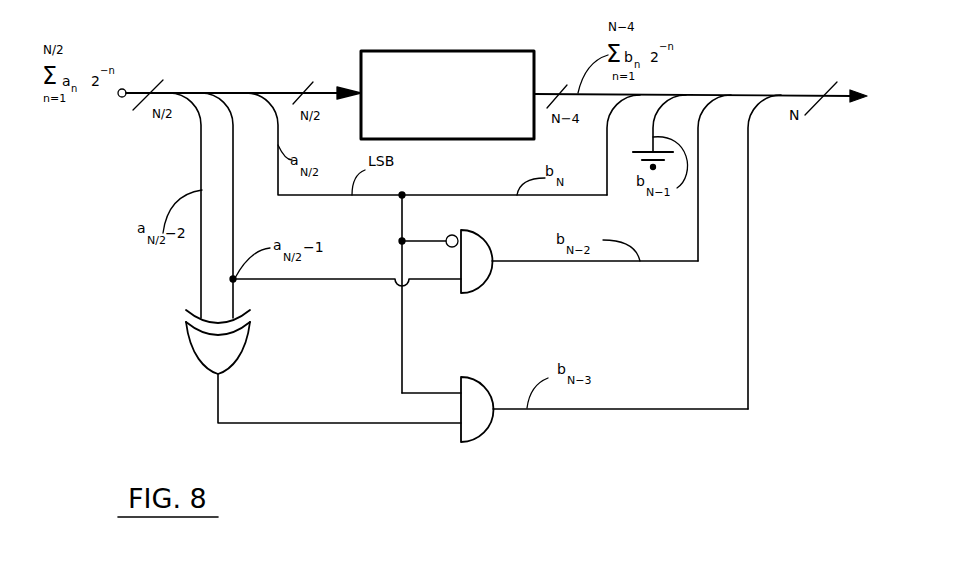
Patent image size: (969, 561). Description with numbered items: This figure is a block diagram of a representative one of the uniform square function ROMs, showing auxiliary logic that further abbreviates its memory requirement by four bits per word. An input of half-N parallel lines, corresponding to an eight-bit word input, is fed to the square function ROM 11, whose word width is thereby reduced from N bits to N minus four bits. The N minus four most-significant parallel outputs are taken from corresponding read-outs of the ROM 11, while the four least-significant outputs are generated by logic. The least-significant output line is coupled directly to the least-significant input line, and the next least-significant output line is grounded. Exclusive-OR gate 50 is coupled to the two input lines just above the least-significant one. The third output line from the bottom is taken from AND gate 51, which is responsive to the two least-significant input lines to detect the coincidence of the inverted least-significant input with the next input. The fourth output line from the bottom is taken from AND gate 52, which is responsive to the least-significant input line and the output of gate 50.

The square function ROM 11 is at (518, 62).
The Exclusive-OR gate 50 is at (205, 352).
The coincidence or AND gate 51 is at (475, 262).
The coincidence or AND gate 52 is at (475, 415).